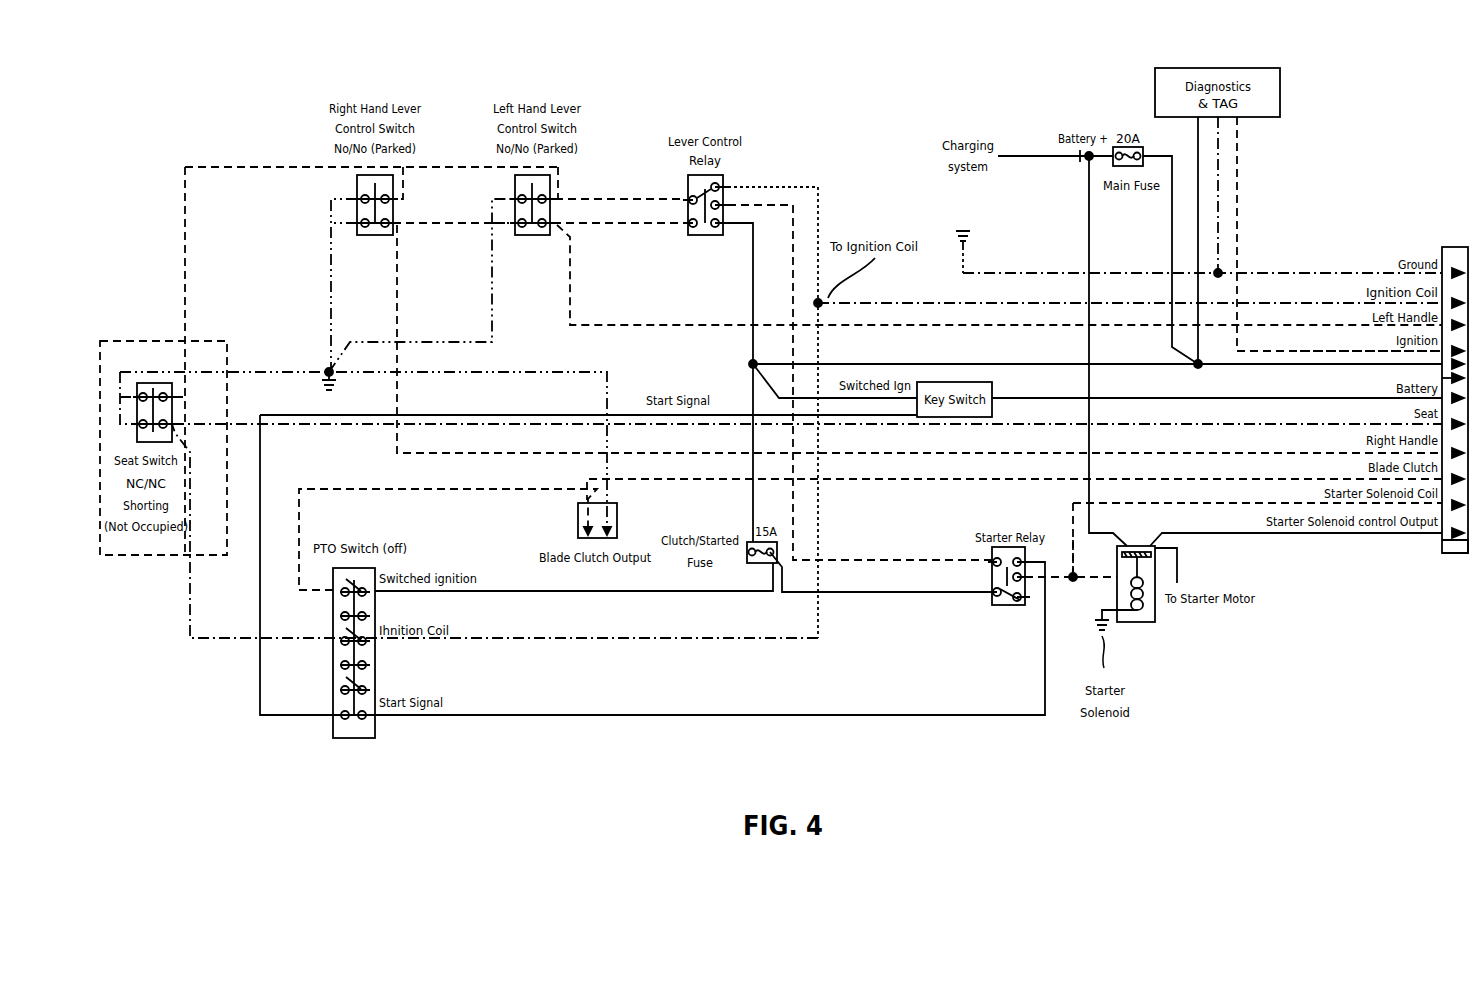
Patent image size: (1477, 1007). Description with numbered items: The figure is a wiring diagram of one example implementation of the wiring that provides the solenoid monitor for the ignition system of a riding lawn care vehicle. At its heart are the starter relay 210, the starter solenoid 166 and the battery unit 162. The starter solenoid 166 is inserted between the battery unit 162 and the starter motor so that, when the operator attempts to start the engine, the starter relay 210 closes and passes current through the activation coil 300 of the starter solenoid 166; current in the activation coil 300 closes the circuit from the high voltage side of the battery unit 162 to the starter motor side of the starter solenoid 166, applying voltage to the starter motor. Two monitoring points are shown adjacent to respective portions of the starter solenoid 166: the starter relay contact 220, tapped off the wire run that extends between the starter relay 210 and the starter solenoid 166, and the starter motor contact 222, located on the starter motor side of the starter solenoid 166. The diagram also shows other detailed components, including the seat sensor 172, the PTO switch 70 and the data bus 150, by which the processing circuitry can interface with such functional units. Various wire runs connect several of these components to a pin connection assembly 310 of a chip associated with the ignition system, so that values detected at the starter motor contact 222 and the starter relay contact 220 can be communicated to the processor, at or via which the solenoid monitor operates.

The battery unit 162 is at (1081, 130).
The data bus 150 is at (1338, 350).
The seat sensor 172 is at (160, 340).
The pin connection assembly 310 is at (1458, 553).
The PTO switch 70 is at (355, 738).
The starter relay 210 is at (992, 598).
The starter relay contact 220 is at (1073, 581).
The starter motor contact 222 is at (1160, 548).
The activation coil 300 is at (1145, 593).
The starter solenoid 166 is at (1129, 613).